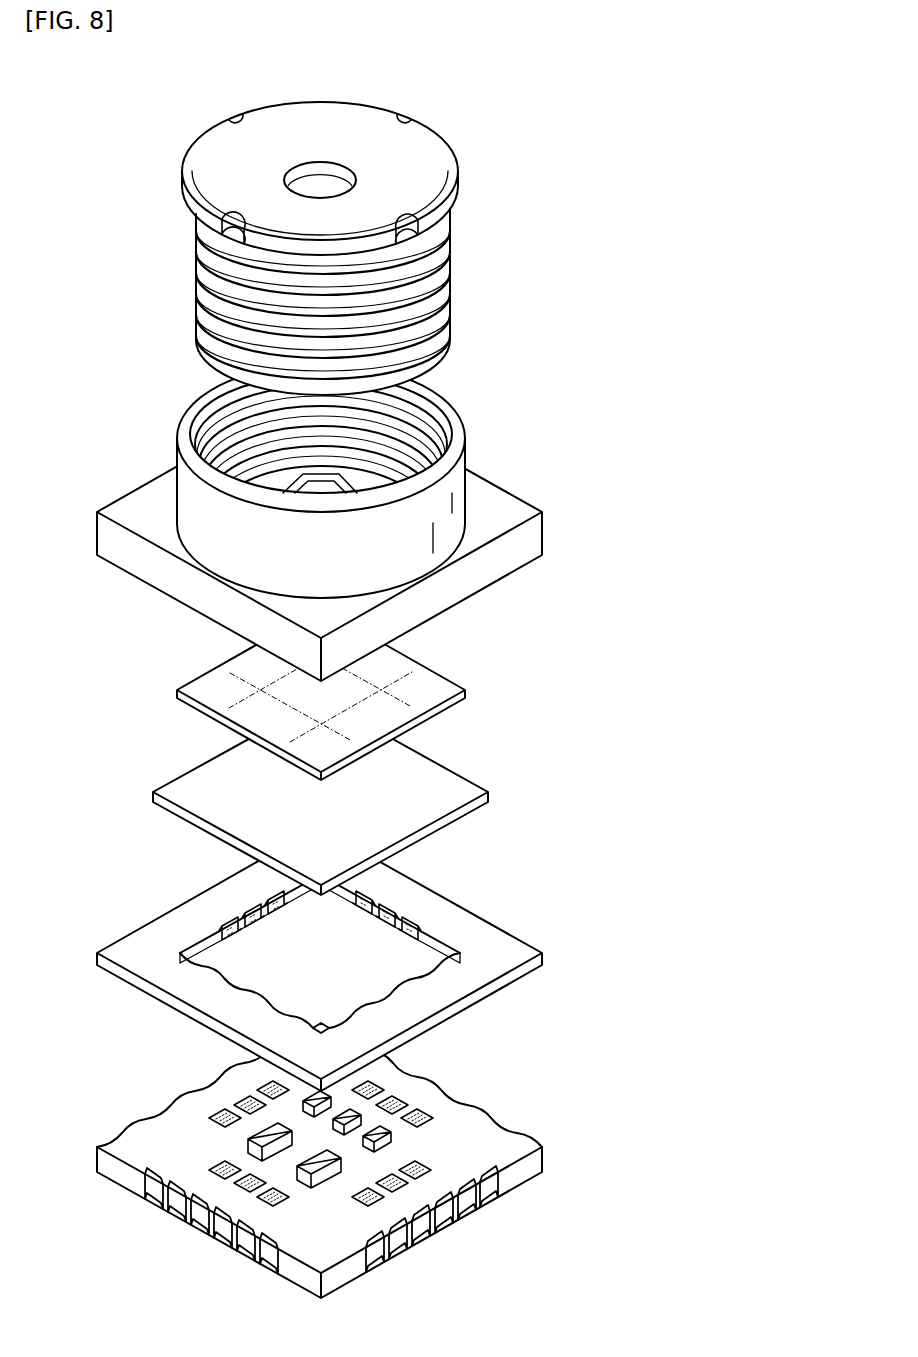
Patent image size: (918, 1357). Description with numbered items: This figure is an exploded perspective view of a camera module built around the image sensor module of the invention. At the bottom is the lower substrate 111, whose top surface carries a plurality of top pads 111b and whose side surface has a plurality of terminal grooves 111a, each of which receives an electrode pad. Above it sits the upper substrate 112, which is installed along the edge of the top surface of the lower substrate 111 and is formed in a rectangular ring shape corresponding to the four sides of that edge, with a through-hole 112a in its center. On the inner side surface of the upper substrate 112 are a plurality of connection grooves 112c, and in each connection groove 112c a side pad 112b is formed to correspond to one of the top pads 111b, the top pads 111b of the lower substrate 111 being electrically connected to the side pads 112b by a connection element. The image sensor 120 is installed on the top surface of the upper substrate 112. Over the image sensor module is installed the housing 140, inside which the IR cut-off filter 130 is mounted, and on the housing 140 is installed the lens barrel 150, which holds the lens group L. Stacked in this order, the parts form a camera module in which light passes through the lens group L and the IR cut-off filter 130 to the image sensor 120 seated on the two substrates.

The lower substrate 111 is at (143, 1140).
The terminal grooves 111a is at (467, 1203).
The top pads 111b is at (387, 1197).
The upper substrate 112 is at (143, 947).
The through-hole 112a is at (283, 938).
The side pad 112b is at (423, 928).
The connection grooves 112c is at (370, 895).
The image sensor 120 is at (423, 768).
The IR cut-off filter 130 is at (425, 682).
The housing 140 is at (498, 498).
The lens barrel 150 is at (448, 225).
The lens group L is at (323, 180).